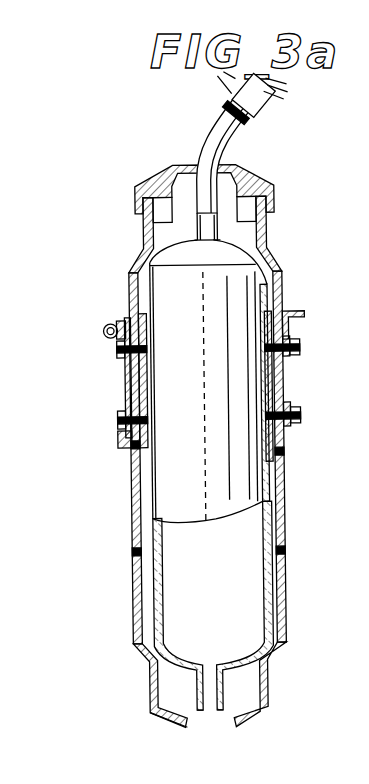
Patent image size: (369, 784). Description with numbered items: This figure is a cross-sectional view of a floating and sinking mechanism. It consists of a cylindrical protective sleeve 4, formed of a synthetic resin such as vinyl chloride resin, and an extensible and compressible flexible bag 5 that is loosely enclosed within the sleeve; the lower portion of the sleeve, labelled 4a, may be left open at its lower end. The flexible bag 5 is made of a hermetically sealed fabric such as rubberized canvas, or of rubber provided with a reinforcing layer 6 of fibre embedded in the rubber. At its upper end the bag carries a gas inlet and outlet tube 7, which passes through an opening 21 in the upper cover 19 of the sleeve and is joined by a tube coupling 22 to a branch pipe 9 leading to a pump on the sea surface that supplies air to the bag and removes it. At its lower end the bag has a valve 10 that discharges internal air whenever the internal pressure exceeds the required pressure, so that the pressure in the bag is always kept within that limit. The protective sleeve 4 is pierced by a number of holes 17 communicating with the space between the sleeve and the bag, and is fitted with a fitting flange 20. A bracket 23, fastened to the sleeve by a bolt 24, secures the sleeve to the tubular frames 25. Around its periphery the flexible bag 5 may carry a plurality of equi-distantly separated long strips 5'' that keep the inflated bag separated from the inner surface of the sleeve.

The cylindrical protective sleeve 4 is at (285, 552).
The lower casing portion 4a is at (266, 680).
The flexible bag 5 is at (132, 647).
The long strips 5'' is at (73, 451).
The reinforcing layer 6 is at (147, 688).
The gas inlet and outlet tube 7 is at (291, 90).
The branch pipe 9 is at (268, 97).
The valve 10 is at (210, 717).
The holes 17 is at (131, 552).
The upper cover 19 is at (160, 176).
The fitting flange 20 is at (278, 198).
The opening 21 is at (277, 186).
The tube coupling 22 is at (231, 108).
The bracket 23 is at (116, 310).
The bolt 24 is at (299, 352).
The tubular frames 25 is at (104, 330).